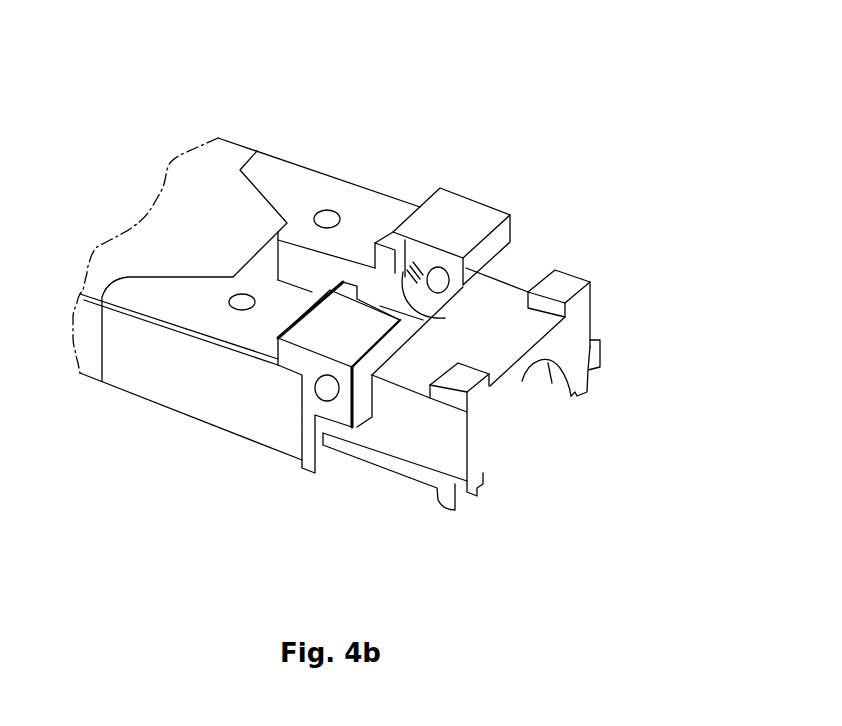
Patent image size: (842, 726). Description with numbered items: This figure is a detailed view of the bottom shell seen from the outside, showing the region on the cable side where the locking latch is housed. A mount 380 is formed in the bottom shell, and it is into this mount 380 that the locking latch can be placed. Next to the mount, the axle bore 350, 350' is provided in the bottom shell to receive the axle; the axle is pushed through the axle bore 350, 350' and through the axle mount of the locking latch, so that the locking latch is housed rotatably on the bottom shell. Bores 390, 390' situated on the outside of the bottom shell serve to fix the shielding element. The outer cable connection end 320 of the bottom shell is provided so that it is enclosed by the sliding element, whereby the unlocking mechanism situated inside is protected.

The bore 390 is at (364, 154).
The mount 380 is at (373, 260).
The axle bore 350 is at (500, 272).
The outer cable connection end 320 is at (493, 348).
The bore 390' is at (147, 372).
The axle bore 350' is at (265, 409).